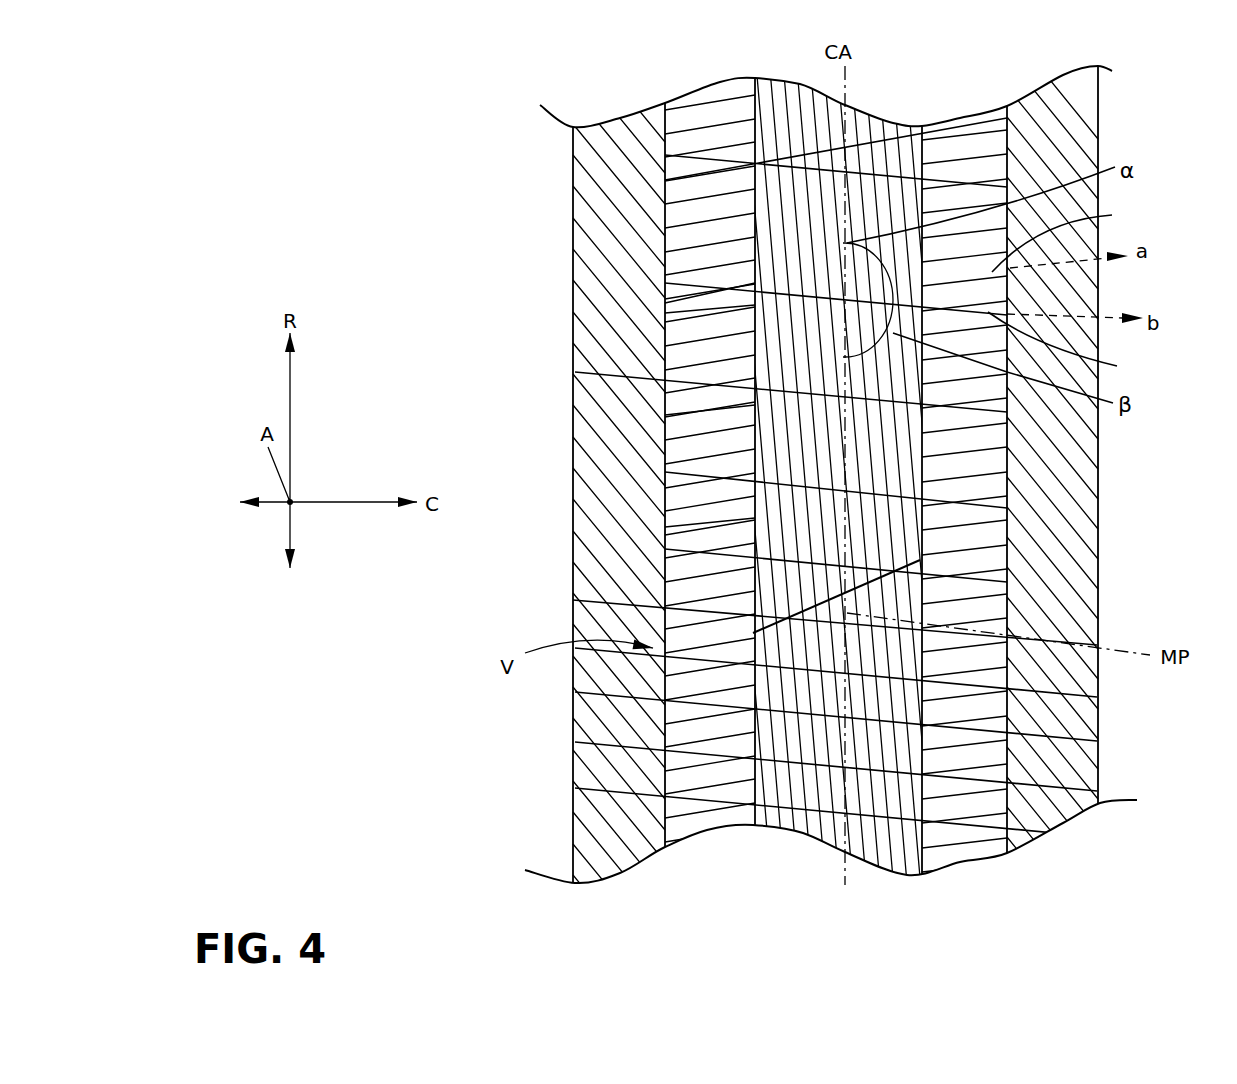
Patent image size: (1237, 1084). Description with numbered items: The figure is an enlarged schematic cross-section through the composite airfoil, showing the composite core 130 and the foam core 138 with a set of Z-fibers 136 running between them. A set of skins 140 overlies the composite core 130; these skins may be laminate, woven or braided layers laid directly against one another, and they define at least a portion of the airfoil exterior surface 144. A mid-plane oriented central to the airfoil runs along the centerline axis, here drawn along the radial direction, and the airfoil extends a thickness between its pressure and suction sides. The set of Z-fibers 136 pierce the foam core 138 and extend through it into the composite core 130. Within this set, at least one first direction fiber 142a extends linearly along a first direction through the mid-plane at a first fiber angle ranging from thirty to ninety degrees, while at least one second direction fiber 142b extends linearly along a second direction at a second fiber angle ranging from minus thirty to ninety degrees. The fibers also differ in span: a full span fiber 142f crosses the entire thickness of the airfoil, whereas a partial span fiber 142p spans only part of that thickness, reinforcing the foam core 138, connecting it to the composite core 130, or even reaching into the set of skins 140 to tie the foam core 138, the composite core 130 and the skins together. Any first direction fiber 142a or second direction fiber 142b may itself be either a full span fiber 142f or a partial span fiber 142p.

The composite core 130 is at (690, 500).
The set of Z-fibers 136 is at (897, 147).
The foam core 138 is at (907, 745).
The set of skins 140 is at (1070, 538).
The first direction fiber 142a is at (1081, 239).
The second direction fiber 142b is at (1076, 345).
The full span fiber 142f is at (1007, 412).
The partial span fiber 142p is at (573, 600).
The airfoil exterior surface 144 is at (575, 347).